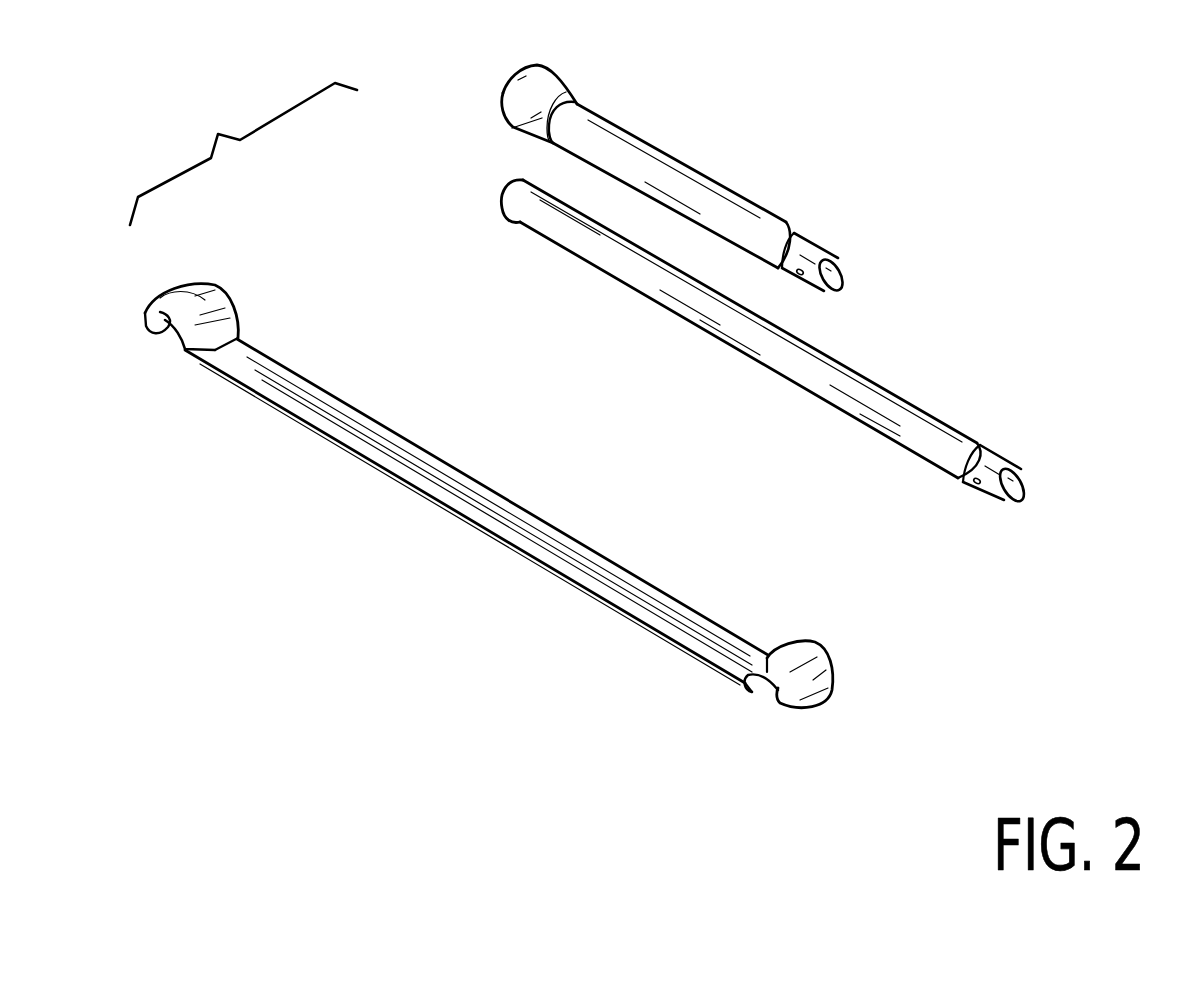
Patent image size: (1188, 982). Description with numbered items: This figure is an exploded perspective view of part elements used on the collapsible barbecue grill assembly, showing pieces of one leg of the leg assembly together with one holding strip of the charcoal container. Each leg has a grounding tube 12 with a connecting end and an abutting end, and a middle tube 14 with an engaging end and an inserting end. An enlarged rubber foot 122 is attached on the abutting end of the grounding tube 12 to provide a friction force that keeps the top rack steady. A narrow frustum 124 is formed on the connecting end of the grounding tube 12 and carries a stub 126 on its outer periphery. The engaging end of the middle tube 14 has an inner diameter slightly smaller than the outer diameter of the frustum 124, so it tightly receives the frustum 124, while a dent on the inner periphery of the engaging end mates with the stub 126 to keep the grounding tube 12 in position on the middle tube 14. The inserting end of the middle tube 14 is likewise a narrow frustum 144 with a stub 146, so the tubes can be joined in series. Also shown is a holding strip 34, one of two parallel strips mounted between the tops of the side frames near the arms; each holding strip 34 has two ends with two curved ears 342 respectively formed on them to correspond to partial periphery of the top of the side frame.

The grounding tube 12 is at (669, 138).
The enlarged rubber foot 122 is at (530, 102).
The narrow frustum 124 is at (808, 253).
The stub 126 is at (798, 273).
The middle tube 14 is at (772, 350).
The narrow frustum 144 is at (985, 458).
The stub 146 is at (974, 483).
The holding strip 34 is at (433, 460).
The curved ear 342 is at (823, 653).